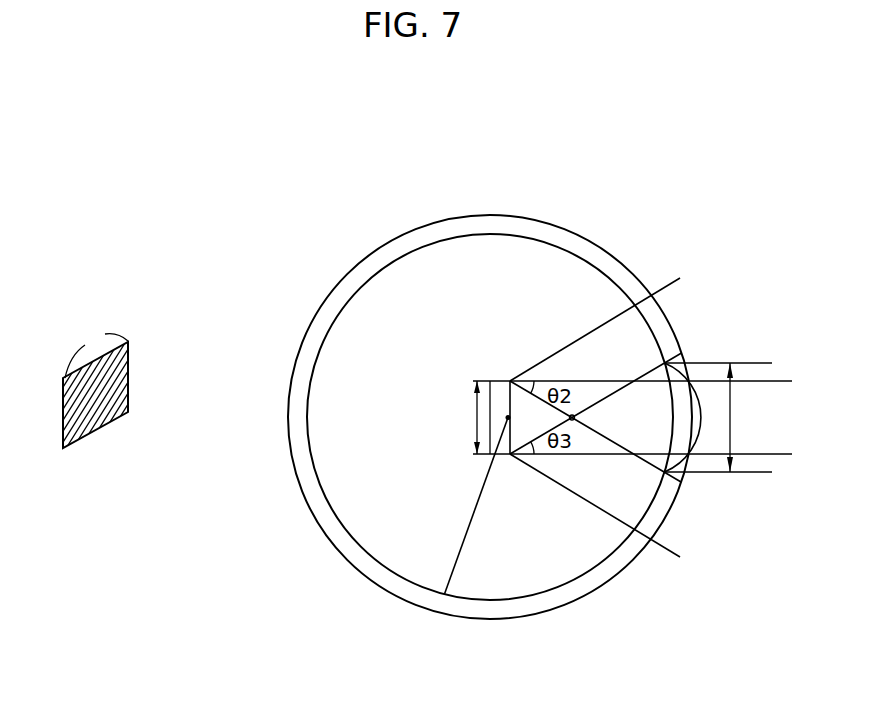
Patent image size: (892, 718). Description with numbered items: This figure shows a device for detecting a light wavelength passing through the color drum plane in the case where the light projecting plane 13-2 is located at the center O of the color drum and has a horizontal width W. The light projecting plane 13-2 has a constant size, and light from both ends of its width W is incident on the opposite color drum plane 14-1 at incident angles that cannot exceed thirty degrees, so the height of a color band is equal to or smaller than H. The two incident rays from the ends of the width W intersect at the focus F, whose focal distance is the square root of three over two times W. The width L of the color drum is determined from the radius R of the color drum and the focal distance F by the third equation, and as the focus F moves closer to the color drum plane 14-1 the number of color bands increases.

The color drum plane 14-1 is at (571, 253).
The light projecting plane 13-2 is at (118, 382).
The width of the light projecting plane W is at (462, 417).
The height of the color band H is at (742, 417).
The width of the color drum L is at (693, 400).
The radius of color drum R is at (505, 421).
The focal distance F is at (588, 419).
The center of a color drum O is at (517, 417).